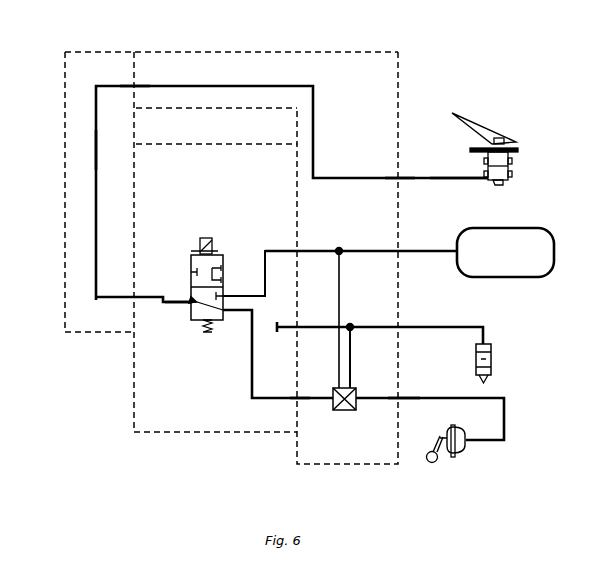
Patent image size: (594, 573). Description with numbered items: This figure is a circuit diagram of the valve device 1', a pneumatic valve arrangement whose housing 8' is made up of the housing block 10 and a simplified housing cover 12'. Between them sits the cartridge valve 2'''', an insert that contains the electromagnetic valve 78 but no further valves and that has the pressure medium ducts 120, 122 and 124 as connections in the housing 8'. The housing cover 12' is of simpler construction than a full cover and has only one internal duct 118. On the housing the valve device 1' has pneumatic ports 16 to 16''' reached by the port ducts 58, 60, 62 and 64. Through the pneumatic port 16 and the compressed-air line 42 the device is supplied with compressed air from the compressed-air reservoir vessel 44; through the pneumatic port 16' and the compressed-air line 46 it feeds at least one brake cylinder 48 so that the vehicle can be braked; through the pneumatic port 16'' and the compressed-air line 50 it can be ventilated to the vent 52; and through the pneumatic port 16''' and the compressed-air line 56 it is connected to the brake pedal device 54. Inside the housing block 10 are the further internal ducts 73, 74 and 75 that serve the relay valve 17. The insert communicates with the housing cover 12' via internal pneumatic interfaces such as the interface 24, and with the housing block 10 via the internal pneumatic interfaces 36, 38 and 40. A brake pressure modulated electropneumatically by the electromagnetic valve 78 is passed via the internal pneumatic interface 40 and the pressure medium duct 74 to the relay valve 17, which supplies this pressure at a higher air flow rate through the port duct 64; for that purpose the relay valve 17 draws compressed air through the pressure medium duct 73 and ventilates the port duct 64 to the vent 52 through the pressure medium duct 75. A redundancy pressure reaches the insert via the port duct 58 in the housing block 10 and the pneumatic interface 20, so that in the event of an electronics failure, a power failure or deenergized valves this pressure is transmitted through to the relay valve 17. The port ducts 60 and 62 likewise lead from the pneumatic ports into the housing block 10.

The valve device 1' is at (370, 235).
The housing 8' is at (231, 220).
The housing block 10 is at (365, 91).
The housing cover 12' is at (99, 77).
The cartridge valve 2'''' is at (216, 101).
The pneumatic port 16 is at (385, 238).
The pneumatic port 16' is at (412, 412).
The pneumatic port 16'' is at (394, 341).
The pneumatic port 16''' is at (412, 164).
The relay valve 17 is at (343, 411).
The pneumatic interface 20 is at (132, 81).
The internal pneumatic interface 24 is at (132, 292).
The internal pneumatic interface 36 is at (298, 247).
The internal pneumatic interface 38 is at (300, 334).
The internal pneumatic interface 40 is at (300, 404).
The compressed-air line 42 is at (425, 253).
The compressed-air reservoir vessel 44 is at (511, 264).
The compressed-air line 46 is at (428, 397).
The brake cylinder 48 is at (457, 456).
The compressed-air line 50 is at (440, 326).
The vent 52 is at (491, 362).
The brake pedal device 54 is at (524, 141).
The compressed-air line 56 is at (457, 182).
The port duct 58 is at (230, 85).
The port duct 60 is at (347, 250).
The port duct 62 is at (359, 326).
The port duct 64 is at (384, 401).
The pressure medium duct 73 is at (341, 273).
The pressure medium duct 74 is at (313, 397).
The pressure medium duct 75 is at (352, 381).
The electromagnetic valve 78 is at (191, 272).
The internal duct 118 is at (96, 150).
The pressure medium duct 120 is at (173, 305).
The pressure medium duct 122 is at (265, 257).
The pressure medium duct 124 is at (254, 375).